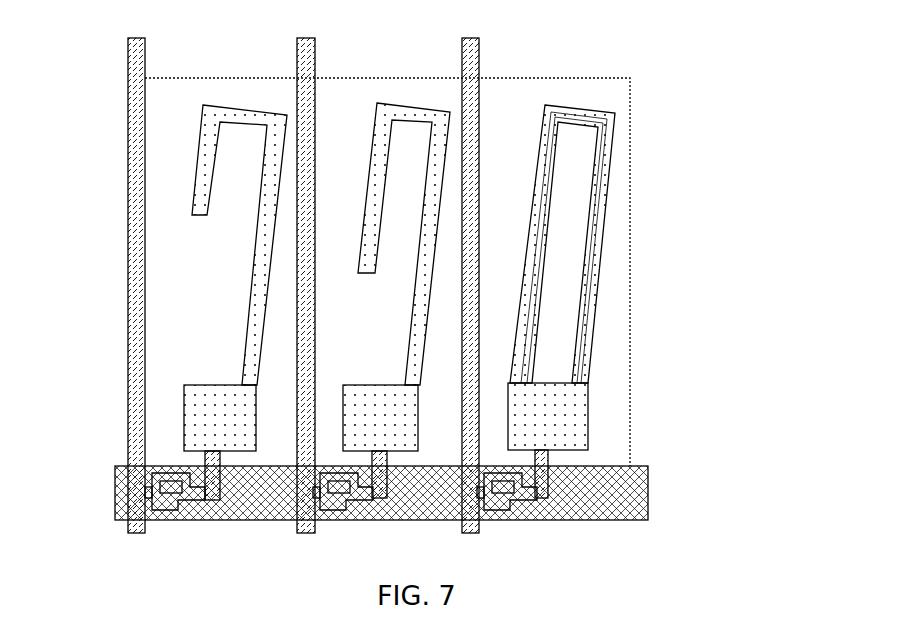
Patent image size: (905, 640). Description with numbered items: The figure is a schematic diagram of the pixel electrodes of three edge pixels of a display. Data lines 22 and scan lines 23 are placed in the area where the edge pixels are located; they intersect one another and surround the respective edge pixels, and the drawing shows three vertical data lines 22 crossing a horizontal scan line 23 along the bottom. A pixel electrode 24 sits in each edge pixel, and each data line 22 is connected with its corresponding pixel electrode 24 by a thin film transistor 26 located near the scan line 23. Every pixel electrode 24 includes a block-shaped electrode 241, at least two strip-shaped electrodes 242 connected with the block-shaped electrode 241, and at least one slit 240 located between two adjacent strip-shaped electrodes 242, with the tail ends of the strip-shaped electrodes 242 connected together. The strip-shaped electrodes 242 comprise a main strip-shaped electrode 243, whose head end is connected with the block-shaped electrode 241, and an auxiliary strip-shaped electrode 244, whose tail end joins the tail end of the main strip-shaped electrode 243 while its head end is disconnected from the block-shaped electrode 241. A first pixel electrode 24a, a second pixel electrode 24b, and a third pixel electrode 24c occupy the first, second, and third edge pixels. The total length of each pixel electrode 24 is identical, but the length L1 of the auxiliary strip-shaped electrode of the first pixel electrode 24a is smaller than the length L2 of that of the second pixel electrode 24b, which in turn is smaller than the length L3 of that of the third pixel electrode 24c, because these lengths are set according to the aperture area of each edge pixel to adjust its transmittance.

The data line 22 is at (140, 317).
The scan line 23 is at (118, 497).
The thin film transistor 26 is at (183, 467).
The first pixel electrode 24a is at (225, 118).
The second pixel electrode 24b is at (405, 115).
The third pixel electrode 24c is at (652, 251).
The pixel electrode 24 is at (652, 287).
The slit 240 is at (652, 287).
The block-shaped electrode 241 is at (614, 413).
The strip-shaped electrode 242 is at (653, 230).
The main strip-shaped electrode 243 is at (597, 205).
The auxiliary strip-shaped electrode 244 is at (550, 160).
The length of the auxiliary strip-shaped electrode of the first pixel electrode L1 is at (190, 110).
The length of the auxiliary strip-shaped electrode of the second pixel electrode L2 is at (343, 273).
The length of the auxiliary strip-shaped electrode of the third pixel electrode L3 is at (495, 378).